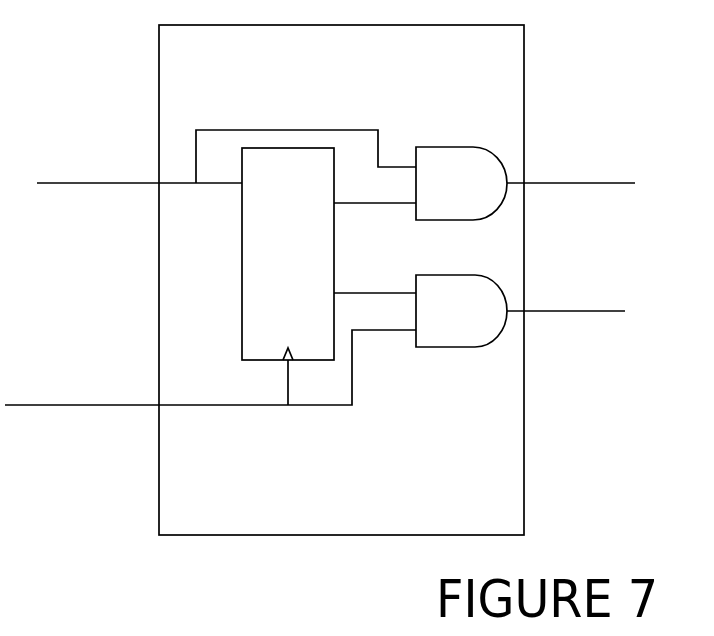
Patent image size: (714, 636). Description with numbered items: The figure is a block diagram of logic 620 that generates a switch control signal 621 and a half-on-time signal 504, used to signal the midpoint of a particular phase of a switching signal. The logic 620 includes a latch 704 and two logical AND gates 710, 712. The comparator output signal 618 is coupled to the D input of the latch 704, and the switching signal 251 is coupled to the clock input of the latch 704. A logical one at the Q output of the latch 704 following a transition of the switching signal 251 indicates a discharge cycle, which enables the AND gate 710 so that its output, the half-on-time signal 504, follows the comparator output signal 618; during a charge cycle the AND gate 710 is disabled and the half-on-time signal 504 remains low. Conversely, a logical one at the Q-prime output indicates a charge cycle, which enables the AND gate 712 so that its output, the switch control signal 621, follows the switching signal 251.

The logic 620 is at (515, 521).
The latch 704 is at (323, 176).
The logical AND gate 710 is at (485, 191).
The logical AND gate 712 is at (492, 320).
The comparator output signal 618 is at (63, 185).
The switching signal 251 is at (58, 407).
The Ton/2 signal 504 is at (550, 185).
The switch control signal 621 is at (551, 313).